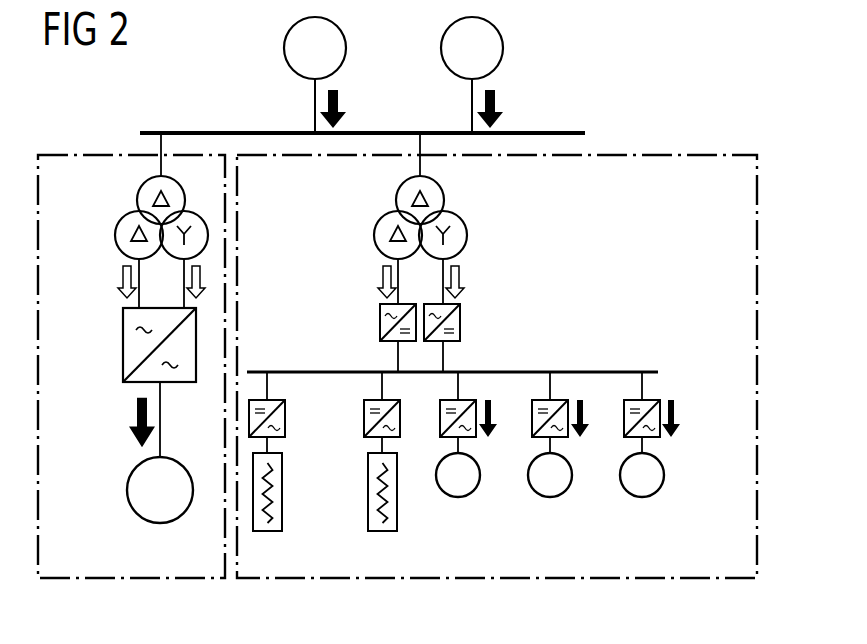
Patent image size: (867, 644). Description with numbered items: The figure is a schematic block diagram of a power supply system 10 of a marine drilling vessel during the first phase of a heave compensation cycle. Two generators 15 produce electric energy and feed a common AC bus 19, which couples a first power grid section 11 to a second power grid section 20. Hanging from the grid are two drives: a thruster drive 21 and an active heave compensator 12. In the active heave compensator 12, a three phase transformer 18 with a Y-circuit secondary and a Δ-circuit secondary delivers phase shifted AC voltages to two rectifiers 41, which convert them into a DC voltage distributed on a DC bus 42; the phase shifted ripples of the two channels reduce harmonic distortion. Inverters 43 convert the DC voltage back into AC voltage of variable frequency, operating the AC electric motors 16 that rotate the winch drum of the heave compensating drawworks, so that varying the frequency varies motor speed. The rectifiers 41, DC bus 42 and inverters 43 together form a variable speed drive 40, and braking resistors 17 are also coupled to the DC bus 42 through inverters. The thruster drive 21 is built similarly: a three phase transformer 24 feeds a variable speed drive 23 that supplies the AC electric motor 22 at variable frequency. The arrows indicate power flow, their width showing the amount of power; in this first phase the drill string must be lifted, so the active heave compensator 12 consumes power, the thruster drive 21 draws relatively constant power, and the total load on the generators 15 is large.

The power supply system 10 is at (597, 98).
The first power grid section 11 is at (432, 130).
The active heave compensator 12 is at (700, 154).
The generators 15 is at (441, 48).
The AC electric motors 16 is at (457, 498).
The braking resistors 17 is at (368, 490).
The three phase transformer 18 is at (468, 233).
The common AC bus 19 is at (552, 131).
The second power grid section 20 is at (212, 130).
The thruster drive 21 is at (87, 153).
The AC electric motor 22 is at (127, 490).
The variable speed drive 23 is at (122, 344).
The three phase transformer 24 is at (115, 235).
The variable speed drive 40 is at (695, 305).
The rectifiers 41 is at (379, 321).
The DC bus 42 is at (297, 370).
The inverters 43 is at (472, 438).